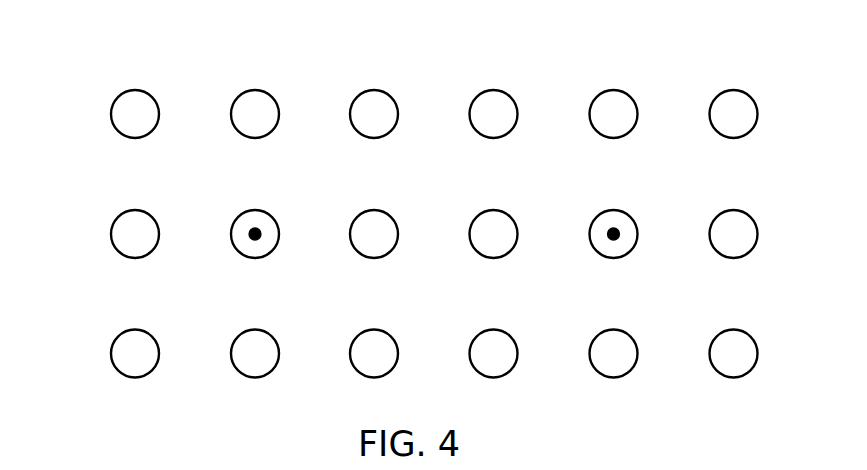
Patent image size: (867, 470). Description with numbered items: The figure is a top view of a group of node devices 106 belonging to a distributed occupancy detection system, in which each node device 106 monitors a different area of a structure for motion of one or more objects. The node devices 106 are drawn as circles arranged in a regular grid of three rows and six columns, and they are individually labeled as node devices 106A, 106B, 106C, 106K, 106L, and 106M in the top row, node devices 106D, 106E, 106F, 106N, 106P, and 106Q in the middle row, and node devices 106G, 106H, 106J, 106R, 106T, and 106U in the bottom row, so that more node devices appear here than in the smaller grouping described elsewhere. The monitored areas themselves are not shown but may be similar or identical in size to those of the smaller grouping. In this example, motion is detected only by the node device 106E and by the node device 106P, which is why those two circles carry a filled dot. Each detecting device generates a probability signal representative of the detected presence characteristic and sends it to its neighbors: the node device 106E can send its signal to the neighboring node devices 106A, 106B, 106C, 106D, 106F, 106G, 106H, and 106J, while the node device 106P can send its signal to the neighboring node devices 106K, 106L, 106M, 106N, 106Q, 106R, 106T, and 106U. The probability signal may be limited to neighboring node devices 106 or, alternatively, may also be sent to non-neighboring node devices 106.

The node device 106 is at (105, 102).
The node device 106A is at (135, 90).
The node device 106B is at (255, 90).
The node device 106C is at (374, 90).
The node device 106K is at (494, 90).
The node device 106L is at (614, 90).
The node device 106M is at (734, 90).
The node device 106D is at (135, 210).
The node device 106E is at (255, 210).
The node device 106F is at (374, 210).
The node device 106N is at (494, 210).
The node device 106P is at (614, 210).
The node device 106Q is at (734, 210).
The node device 106G is at (135, 330).
The node device 106H is at (255, 330).
The node device 106J is at (374, 330).
The node device 106R is at (494, 330).
The node device 106T is at (614, 330).
The node device 106U is at (734, 330).